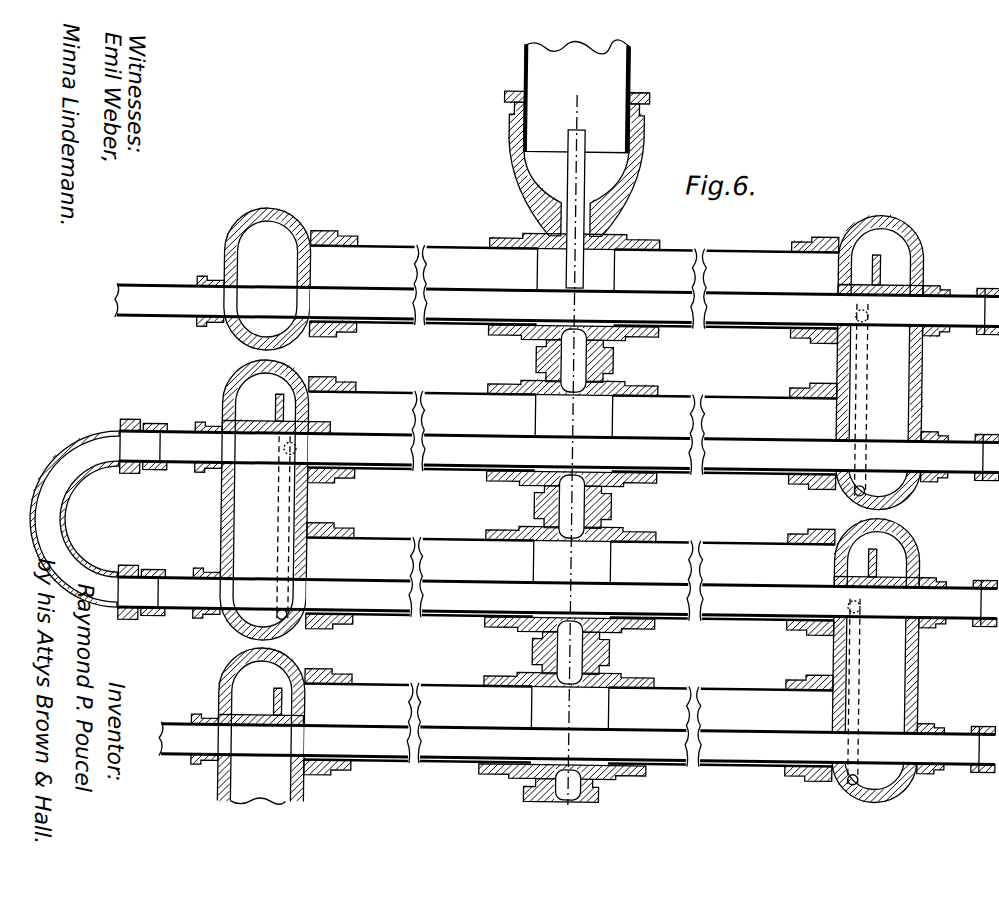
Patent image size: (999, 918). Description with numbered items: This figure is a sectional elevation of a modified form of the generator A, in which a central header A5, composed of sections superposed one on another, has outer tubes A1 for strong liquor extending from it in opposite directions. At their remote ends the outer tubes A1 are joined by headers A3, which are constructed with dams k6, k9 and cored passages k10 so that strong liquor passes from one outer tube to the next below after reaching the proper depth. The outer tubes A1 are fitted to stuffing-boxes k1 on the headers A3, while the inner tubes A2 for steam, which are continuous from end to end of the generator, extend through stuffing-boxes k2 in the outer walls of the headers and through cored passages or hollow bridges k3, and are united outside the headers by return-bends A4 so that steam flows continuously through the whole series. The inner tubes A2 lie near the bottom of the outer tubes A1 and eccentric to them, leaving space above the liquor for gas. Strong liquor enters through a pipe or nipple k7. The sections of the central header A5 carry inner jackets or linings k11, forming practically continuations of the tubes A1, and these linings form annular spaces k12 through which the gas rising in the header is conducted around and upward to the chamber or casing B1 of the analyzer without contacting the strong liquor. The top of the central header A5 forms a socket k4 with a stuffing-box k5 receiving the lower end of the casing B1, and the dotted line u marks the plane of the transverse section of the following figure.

The generator A is at (811, 191).
The outer tubes A1 is at (595, 506).
The inner tubes A2 is at (291, 521).
The headers A3 is at (876, 664).
The return-bends A4 is at (60, 540).
The central header A5 is at (597, 672).
The analyzer or separator chamber or casing B1 is at (577, 96).
The stuffing-boxes k1 is at (577, 374).
The stuffing-boxes k2 is at (576, 487).
The cored passages or hollow bridges k3 is at (570, 423).
The socket k4 is at (640, 157).
The stuffing-box k5 is at (643, 103).
The dams k6 is at (294, 424).
The pipe or nipple k7 is at (594, 283).
The dams k9 is at (576, 482).
The cored passages k10 is at (857, 313).
The inner jackets or linings k11 is at (594, 246).
The annular spaces k12 is at (546, 250).
The dotted line u u is at (572, 460).